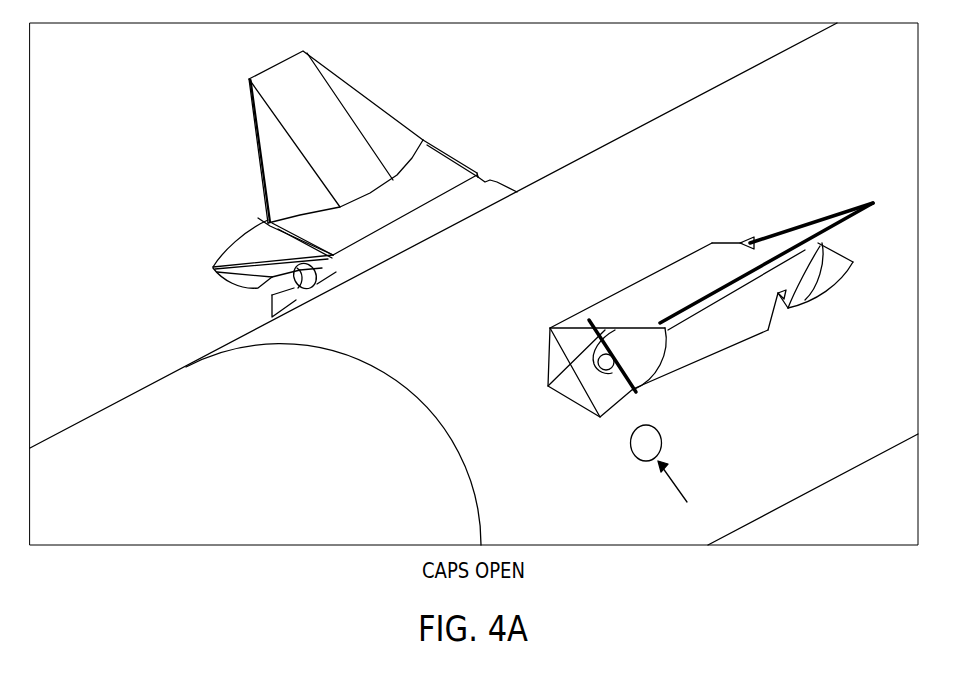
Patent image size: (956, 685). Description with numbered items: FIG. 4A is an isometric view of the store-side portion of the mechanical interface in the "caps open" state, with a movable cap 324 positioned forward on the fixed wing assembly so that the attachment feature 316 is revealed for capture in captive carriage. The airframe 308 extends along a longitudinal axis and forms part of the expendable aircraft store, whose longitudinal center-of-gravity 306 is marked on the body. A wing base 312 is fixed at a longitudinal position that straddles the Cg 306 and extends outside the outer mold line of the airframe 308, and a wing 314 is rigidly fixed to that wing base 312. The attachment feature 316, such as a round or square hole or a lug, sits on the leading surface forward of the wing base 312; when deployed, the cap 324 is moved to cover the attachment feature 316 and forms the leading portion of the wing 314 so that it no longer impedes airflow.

The longitudinal center-of-gravity (Cg) 306 is at (678, 517).
The airframe 308 is at (128, 393).
The wing base 312 is at (467, 198).
The wing 314 is at (277, 64).
The attachment feature 316 is at (302, 280).
The cap 324 is at (230, 240).